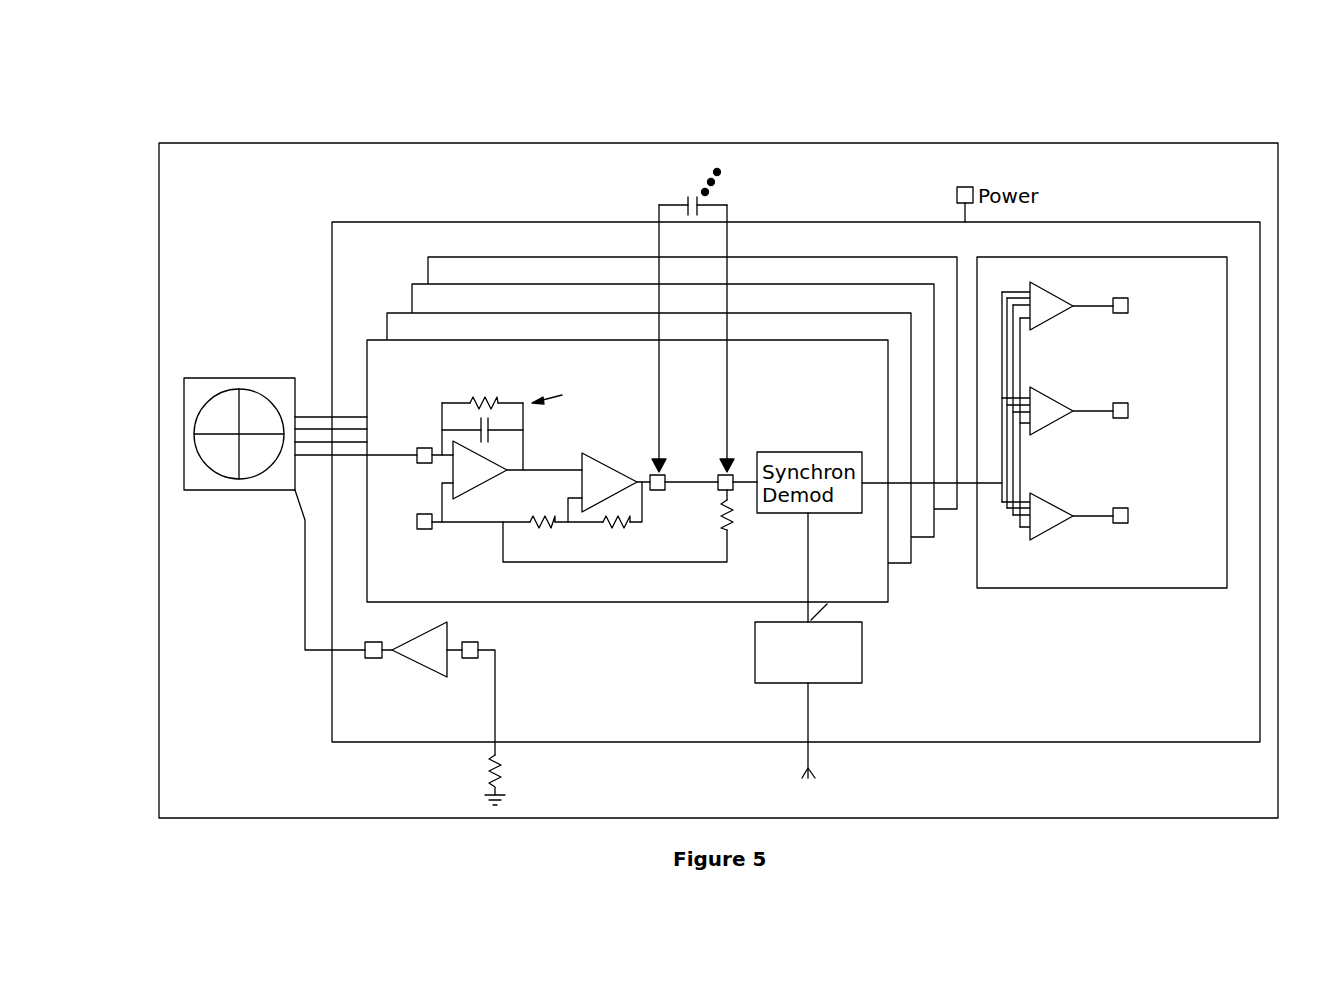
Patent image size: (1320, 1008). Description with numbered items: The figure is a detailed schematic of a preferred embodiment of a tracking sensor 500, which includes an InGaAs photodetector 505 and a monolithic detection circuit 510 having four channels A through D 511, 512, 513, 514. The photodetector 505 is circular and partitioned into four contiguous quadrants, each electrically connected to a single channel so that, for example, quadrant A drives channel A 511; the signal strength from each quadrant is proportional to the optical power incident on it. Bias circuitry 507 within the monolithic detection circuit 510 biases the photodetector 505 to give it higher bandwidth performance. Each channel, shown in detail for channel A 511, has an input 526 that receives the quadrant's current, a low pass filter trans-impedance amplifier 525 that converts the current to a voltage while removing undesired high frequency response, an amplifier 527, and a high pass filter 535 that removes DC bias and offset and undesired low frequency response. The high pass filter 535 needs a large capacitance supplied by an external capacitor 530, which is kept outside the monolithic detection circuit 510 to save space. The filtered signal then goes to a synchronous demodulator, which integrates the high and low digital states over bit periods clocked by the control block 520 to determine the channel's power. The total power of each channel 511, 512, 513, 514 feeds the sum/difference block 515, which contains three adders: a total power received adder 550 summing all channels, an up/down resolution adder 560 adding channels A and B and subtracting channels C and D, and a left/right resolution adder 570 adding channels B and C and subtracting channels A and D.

The tracking sensor 500 is at (983, 98).
The InGaAs photodetector 505 is at (242, 490).
The bias circuitry 507 is at (408, 658).
The monolithic detection circuit 510 is at (993, 743).
The channel A 511 is at (888, 607).
The channel B 512 is at (905, 567).
The channel C 513 is at (920, 538).
The channel D 514 is at (943, 512).
The sum/difference block 515 is at (1102, 447).
The control block 520 is at (843, 685).
The low pass filter trans-impedance amplifier 525 is at (532, 380).
The input 526 is at (422, 463).
The amplifier 527 is at (600, 458).
The external capacitor 530 is at (687, 198).
The high pass filter 535 is at (743, 450).
The total power received adder 550 is at (1040, 430).
The up/down resolution adder 560 is at (1040, 325).
The left/right resolution adder 570 is at (1040, 537).